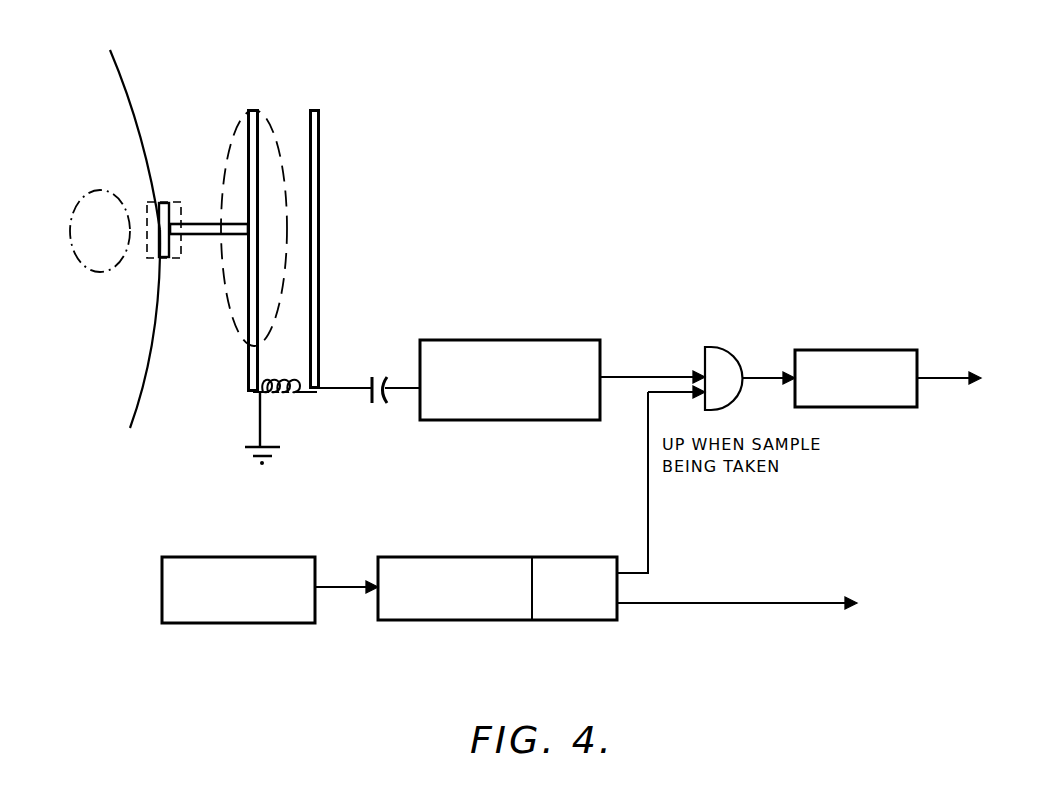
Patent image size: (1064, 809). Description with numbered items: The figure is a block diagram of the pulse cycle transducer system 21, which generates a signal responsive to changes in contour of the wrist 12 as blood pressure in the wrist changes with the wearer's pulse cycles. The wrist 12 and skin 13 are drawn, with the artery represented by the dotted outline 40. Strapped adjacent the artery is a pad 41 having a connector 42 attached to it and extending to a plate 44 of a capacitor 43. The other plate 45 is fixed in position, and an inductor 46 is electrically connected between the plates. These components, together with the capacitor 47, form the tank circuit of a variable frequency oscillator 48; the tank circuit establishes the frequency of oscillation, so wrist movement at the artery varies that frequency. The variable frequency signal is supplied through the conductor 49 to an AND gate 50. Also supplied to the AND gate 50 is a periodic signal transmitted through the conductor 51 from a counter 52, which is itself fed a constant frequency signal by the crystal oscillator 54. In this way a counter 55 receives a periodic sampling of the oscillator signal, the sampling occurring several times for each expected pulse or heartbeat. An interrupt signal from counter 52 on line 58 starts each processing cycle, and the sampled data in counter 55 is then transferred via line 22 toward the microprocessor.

The wrist 12 is at (145, 99).
The skin 13 is at (145, 400).
The pulse cycle transducer system 21 is at (398, 166).
The line 22 is at (940, 372).
The dotted outline 40 is at (83, 200).
The pad 41 is at (166, 201).
The connector 42 is at (207, 237).
The capacitor 43 is at (282, 119).
The plate 44 is at (247, 160).
The other plate 45 is at (320, 216).
The inductor 46 is at (301, 397).
The capacitor 47 is at (384, 374).
The variable frequency oscillator 48 is at (478, 345).
The conductor 49 is at (615, 373).
The AND gate 50 is at (729, 358).
The conductor 51 is at (647, 478).
The counter 52 is at (478, 558).
The crystal oscillator 54 is at (265, 558).
The counter 55 is at (823, 355).
The line 58 is at (800, 600).